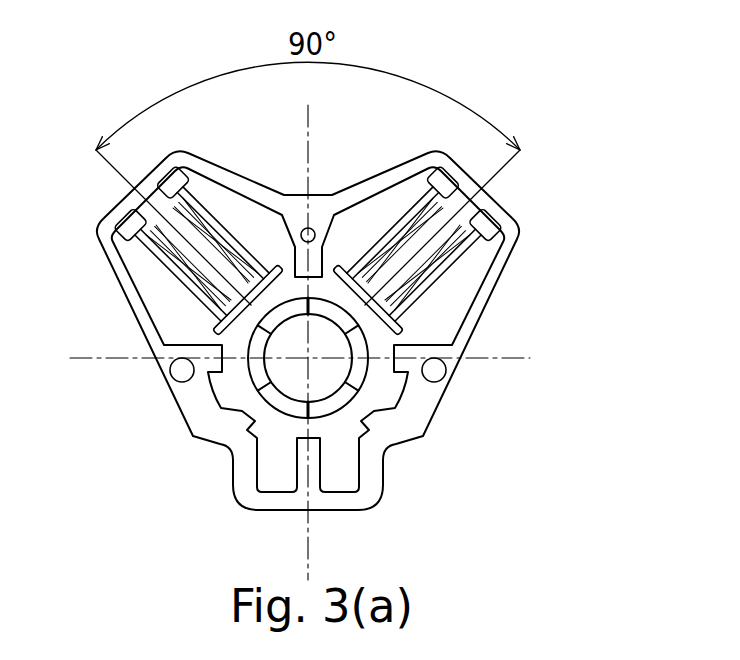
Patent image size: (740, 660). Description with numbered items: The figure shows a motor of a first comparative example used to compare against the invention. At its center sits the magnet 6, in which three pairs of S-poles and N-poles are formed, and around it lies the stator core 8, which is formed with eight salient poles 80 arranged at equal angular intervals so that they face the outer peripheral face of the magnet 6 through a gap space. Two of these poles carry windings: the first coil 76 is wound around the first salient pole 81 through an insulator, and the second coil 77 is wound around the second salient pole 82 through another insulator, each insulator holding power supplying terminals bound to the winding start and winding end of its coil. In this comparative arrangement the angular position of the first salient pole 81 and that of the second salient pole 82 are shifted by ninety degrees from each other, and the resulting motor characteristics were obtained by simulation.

The magnet 6 is at (232, 339).
The stator core 8 is at (523, 306).
The first coil 76 is at (398, 223).
The second coil 77 is at (168, 260).
The salient poles 80 is at (327, 257).
The first salient pole 81 is at (455, 255).
The second salient pole 82 is at (193, 237).